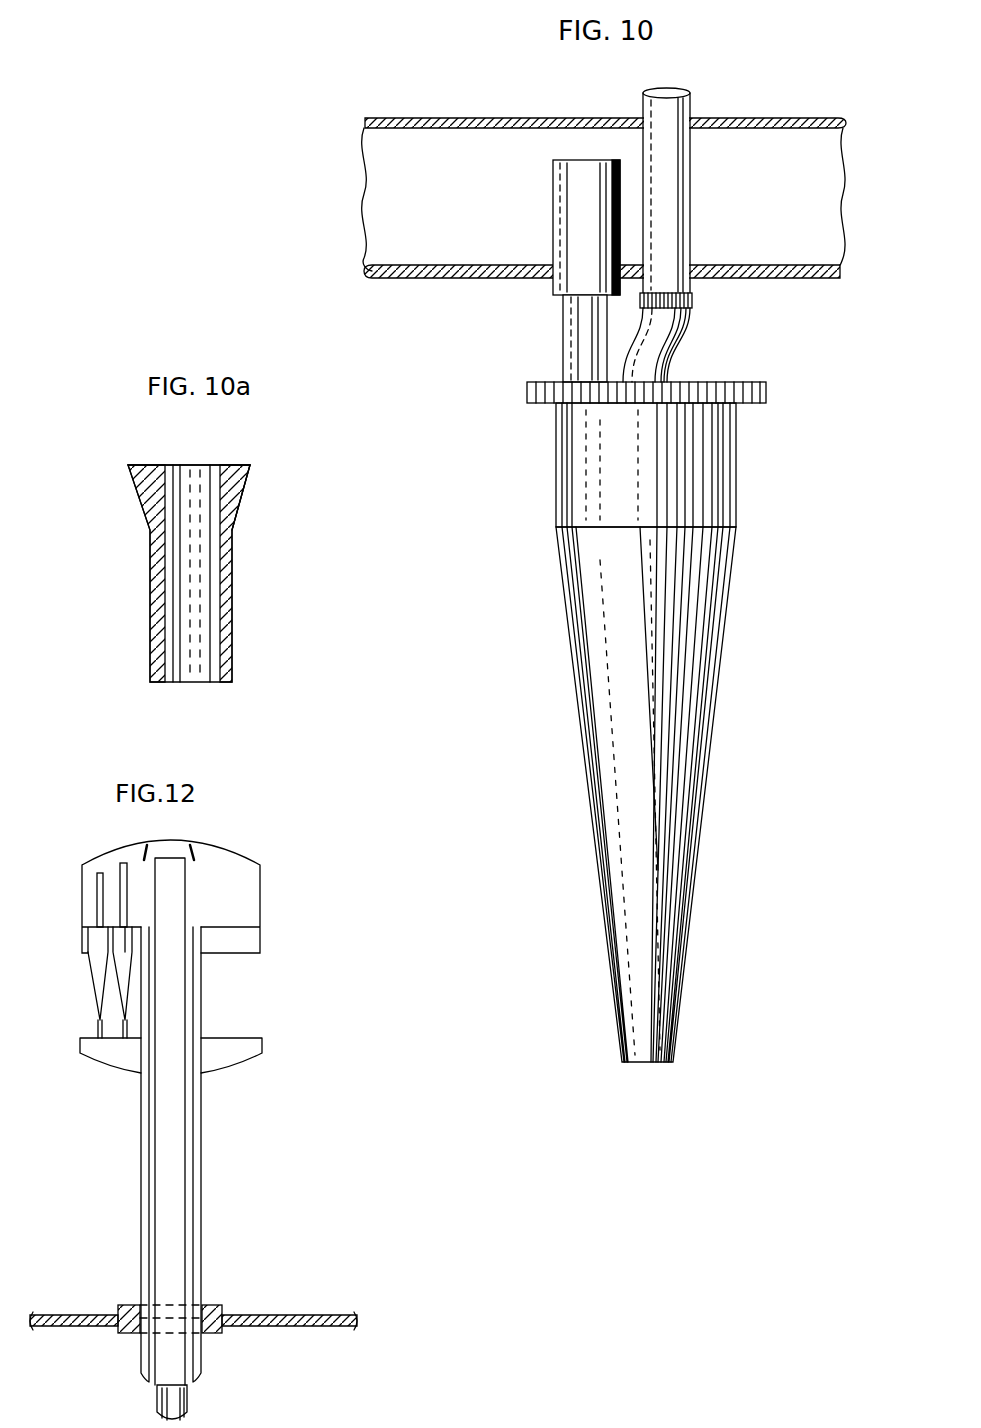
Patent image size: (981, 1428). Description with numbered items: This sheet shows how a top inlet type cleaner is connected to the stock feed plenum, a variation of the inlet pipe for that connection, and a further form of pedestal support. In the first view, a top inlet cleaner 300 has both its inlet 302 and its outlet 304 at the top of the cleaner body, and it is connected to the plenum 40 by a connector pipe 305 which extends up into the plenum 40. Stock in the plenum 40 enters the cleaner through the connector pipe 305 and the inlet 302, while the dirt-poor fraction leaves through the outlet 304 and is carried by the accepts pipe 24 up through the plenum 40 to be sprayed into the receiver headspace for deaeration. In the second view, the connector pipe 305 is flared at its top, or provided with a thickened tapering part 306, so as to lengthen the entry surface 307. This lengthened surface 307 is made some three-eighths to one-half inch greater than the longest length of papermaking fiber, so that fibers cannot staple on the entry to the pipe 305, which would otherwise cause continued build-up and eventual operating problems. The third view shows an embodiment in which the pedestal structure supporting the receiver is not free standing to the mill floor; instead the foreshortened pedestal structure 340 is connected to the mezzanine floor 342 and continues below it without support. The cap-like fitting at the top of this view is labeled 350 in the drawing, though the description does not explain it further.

In FIG. 10, the accepts pipe 24 is at (688, 107).
In FIG. 10, the plenum 40 is at (738, 162).
In FIG. 10, the top inlet cleaner 300 is at (712, 762).
In FIG. 10, the inlet 302 is at (563, 330).
In FIG. 10, the outlet 304 is at (677, 336).
In FIG. 10, the connector pipe 305 is at (552, 216).
In FIG. 10A, the connector pipe 305 is at (226, 607).
In FIG. 10A, the thickened tapering part 306 is at (243, 497).
In FIG. 10A, the lengthened surface 307 is at (236, 467).
In FIG. 12, the pedestal structure 340 is at (202, 1347).
In FIG. 12, the mezzanine floor 342 is at (268, 1313).
In FIG. 12, the cap 350 is at (200, 842).